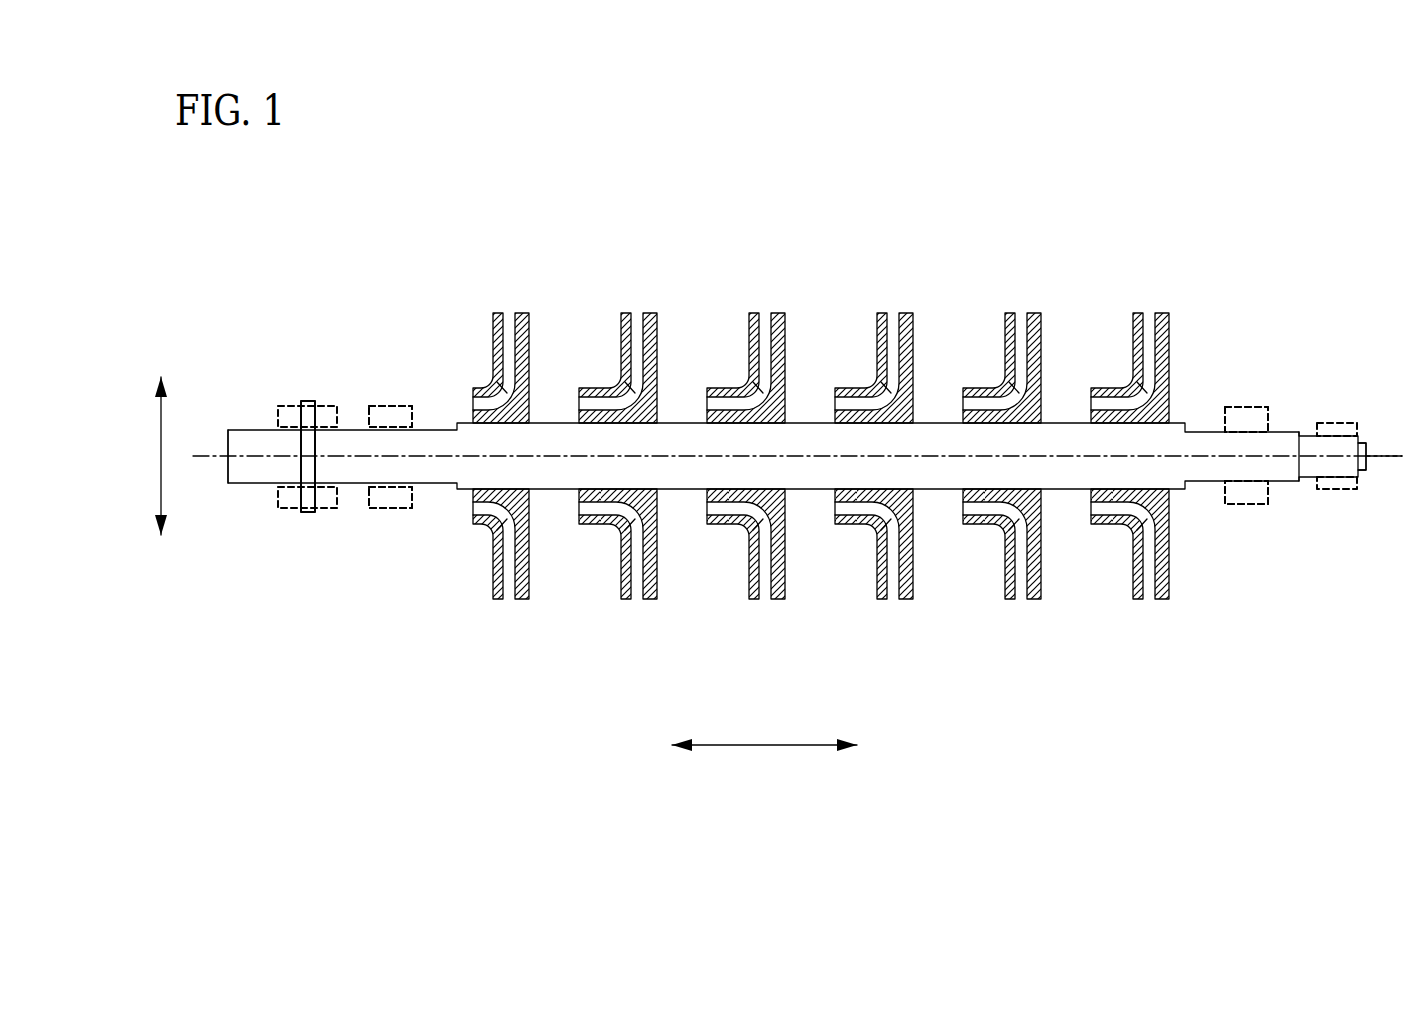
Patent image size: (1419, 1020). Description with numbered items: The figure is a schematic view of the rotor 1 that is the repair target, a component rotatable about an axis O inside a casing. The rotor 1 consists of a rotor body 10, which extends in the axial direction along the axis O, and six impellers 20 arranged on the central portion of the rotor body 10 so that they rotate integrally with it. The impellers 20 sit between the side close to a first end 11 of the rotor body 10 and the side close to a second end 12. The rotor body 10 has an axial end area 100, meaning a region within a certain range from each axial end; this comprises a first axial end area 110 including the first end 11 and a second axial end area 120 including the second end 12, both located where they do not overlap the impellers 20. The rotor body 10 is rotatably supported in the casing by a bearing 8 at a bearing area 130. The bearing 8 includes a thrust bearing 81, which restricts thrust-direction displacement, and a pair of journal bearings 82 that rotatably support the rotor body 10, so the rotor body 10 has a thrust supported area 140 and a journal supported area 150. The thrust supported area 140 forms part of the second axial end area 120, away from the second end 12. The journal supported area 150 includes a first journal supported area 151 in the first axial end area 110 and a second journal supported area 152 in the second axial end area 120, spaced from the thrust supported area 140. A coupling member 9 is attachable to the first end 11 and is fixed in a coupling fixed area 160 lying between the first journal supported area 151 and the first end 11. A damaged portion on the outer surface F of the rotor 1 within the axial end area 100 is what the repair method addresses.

The rotor 1 is at (1313, 213).
The bearing 8 is at (772, 414).
The coupling member 9 is at (1340, 470).
The rotor body 10 is at (1183, 417).
The first end 11 is at (1367, 462).
The second end 12 is at (228, 469).
The impeller 20 is at (521, 313).
The thrust bearing 81 is at (393, 487).
The journal bearing 82 is at (292, 487).
The axial end area 100 is at (817, 560).
The first axial end area 110 is at (1393, 633).
The second axial end area 120 is at (485, 633).
The bearing area 130 is at (759, 518).
The thrust supported area 140 is at (338, 522).
The journal supported area 150 is at (825, 520).
The first journal supported area 151 is at (1270, 522).
The second journal supported area 152 is at (365, 522).
The coupling fixed area 160 is at (1313, 522).
The outer surface F is at (1302, 432).
The axis O is at (1385, 457).